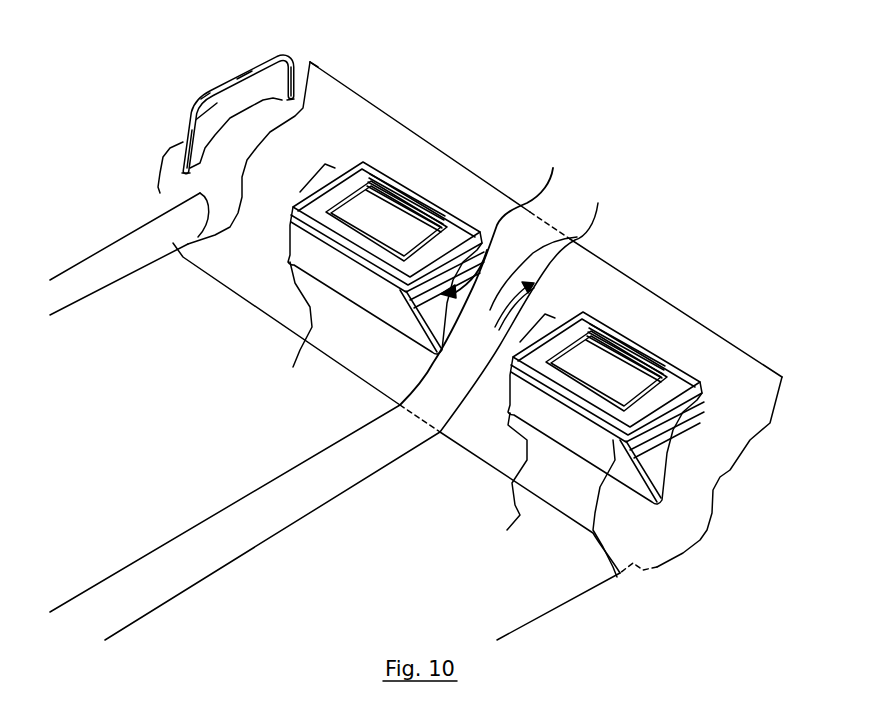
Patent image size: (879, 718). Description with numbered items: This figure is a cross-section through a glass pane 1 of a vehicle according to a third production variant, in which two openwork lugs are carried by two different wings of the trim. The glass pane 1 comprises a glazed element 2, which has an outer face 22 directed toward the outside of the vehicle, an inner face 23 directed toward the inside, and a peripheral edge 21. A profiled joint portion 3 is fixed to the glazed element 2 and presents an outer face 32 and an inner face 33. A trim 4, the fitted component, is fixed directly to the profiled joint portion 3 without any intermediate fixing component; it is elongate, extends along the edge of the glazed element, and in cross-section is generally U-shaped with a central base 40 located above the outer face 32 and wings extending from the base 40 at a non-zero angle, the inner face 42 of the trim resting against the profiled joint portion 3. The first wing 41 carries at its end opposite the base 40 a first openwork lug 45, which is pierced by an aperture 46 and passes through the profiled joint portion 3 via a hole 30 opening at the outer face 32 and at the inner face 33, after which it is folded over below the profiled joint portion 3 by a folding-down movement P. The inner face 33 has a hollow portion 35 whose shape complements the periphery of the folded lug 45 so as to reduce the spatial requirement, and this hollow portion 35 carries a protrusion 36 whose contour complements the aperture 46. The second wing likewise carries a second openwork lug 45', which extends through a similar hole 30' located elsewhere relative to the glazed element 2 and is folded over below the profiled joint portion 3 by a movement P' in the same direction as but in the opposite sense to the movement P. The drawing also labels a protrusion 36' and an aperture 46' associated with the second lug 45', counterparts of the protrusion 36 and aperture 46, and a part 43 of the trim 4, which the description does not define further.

The glass pane 1 is at (652, 96).
The glazed element 2 is at (151, 248).
The profiled joint portion 3 is at (227, 181).
The trim 4 is at (223, 90).
The peripheral edge 21 is at (203, 208).
The outer face 22 is at (83, 260).
The inner face 23 is at (128, 267).
The hole 30 is at (389, 209).
The hole 30' is at (606, 454).
The outer face 32 is at (310, 61).
The inner face 33 is at (720, 418).
The hollow portion 35 is at (343, 253).
The protrusion 36 is at (407, 187).
The recess of second locking block 36' is at (633, 327).
The base 40 is at (253, 72).
The first wing 41 is at (293, 60).
The inner face of the trim 42 is at (217, 98).
The clip leg 43 is at (187, 123).
The first openwork lug 45 is at (418, 169).
The second openwork lug 45' is at (502, 408).
The aperture 46 is at (408, 139).
The ribs of second block 46' is at (644, 277).
The folding-down movement P is at (478, 275).
The movement P' is at (526, 301).